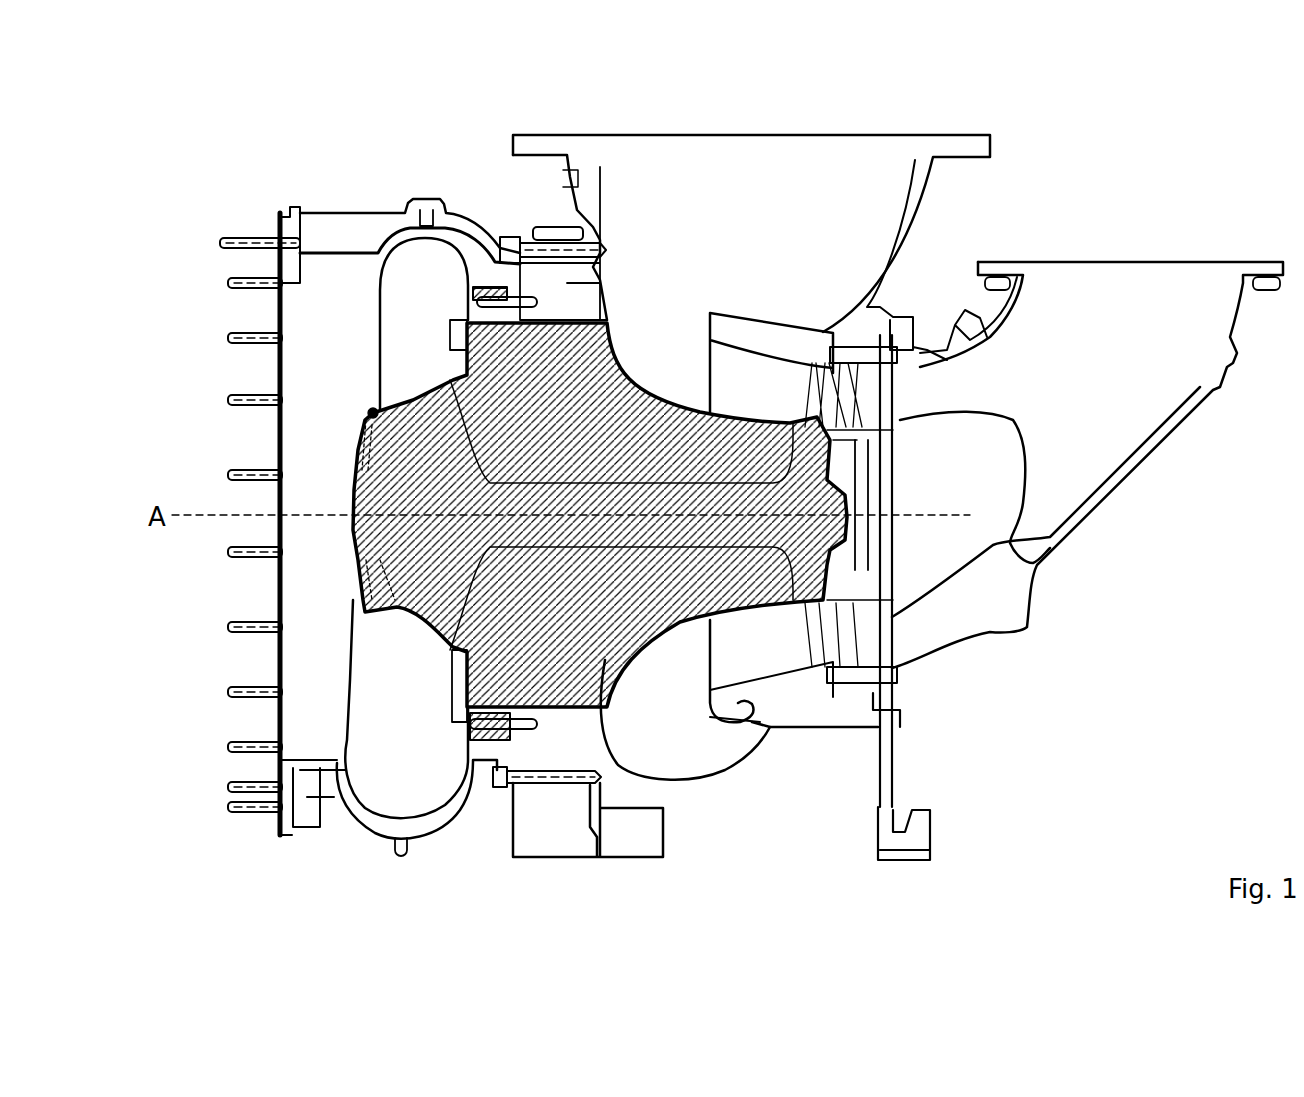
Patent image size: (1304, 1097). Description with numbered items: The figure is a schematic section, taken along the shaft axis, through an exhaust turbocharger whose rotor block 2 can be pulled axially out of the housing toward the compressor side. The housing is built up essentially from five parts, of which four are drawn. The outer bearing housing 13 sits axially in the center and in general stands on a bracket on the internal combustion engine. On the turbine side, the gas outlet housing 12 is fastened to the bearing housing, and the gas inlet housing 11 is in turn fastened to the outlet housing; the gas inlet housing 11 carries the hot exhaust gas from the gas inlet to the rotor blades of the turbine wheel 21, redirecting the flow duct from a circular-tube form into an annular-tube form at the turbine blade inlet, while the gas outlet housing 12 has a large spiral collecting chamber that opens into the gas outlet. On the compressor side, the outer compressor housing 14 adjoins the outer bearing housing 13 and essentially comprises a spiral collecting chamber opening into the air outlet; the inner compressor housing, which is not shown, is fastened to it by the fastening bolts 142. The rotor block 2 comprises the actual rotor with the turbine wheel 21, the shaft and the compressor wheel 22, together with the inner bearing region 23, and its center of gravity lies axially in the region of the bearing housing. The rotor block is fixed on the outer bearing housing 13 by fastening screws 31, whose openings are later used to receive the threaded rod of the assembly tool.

The rotor block 2 is at (568, 432).
The gas inlet housing 11 is at (1148, 370).
The gas outlet housing 12 is at (680, 160).
The outer bearing housing 13 is at (530, 237).
The outer compressor housing 14 is at (388, 220).
The turbine wheel 21 is at (817, 557).
The compressor wheel 22 is at (380, 440).
The inner bearing region 23 is at (522, 683).
The fastening screws 31 is at (488, 300).
The fastening bolts 142 is at (230, 473).